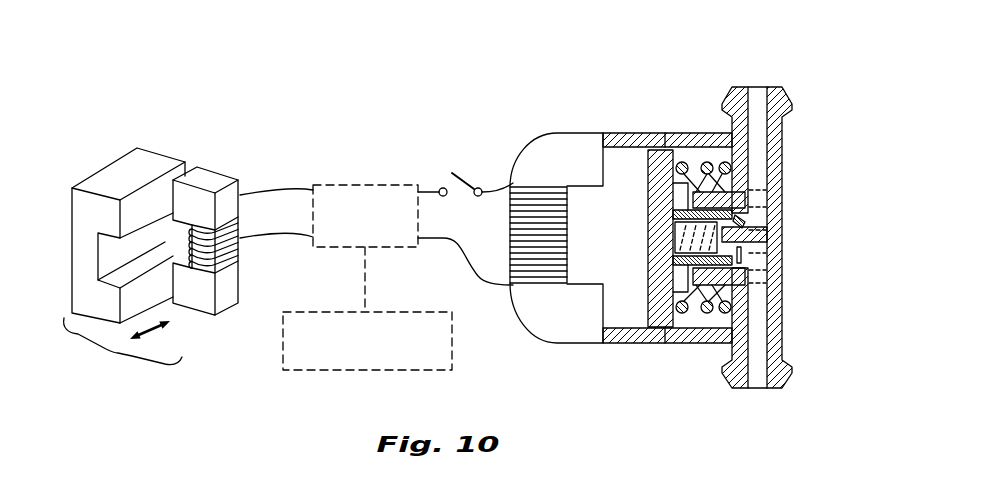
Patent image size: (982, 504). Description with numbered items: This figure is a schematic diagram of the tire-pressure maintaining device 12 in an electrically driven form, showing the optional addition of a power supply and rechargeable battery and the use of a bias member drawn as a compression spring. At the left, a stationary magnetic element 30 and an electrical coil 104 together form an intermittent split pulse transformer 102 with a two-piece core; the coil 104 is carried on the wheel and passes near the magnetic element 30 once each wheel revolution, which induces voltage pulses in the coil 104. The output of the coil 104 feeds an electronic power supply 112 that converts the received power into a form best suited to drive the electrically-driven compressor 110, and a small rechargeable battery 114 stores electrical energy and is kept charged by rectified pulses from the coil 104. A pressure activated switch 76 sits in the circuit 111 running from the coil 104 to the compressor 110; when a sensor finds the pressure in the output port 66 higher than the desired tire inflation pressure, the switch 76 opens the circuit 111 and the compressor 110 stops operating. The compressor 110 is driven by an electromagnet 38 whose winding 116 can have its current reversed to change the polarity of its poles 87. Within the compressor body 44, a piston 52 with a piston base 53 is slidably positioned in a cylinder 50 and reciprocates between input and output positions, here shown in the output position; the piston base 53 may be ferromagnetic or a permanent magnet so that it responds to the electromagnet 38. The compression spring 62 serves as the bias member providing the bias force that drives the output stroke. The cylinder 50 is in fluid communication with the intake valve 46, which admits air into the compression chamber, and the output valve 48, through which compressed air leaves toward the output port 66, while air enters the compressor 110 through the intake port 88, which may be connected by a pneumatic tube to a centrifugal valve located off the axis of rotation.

The device 12 is at (320, 90).
The magnetic element 30 is at (108, 163).
The intermittent split pulse transformer 102 is at (123, 352).
The electrical coil 104 is at (240, 181).
The electronic power supply 112 is at (380, 185).
The rechargeable battery 114 is at (405, 312).
The pressure activated switch 76 is at (465, 173).
The circuit 111 is at (496, 166).
The electromagnet 38 is at (543, 343).
The winding 116 is at (535, 275).
The compressor body 44 is at (705, 133).
The poles 87 is at (586, 170).
The compression spring 62 is at (675, 185).
The piston base 53 is at (640, 267).
The piston 52 is at (682, 312).
The cylinder 50 is at (726, 312).
The output valve 48 is at (745, 225).
The intake valve 46 is at (748, 255).
The electrically-driven compressor 110 is at (777, 80).
The output port 66 is at (762, 128).
The intake port 88 is at (760, 355).